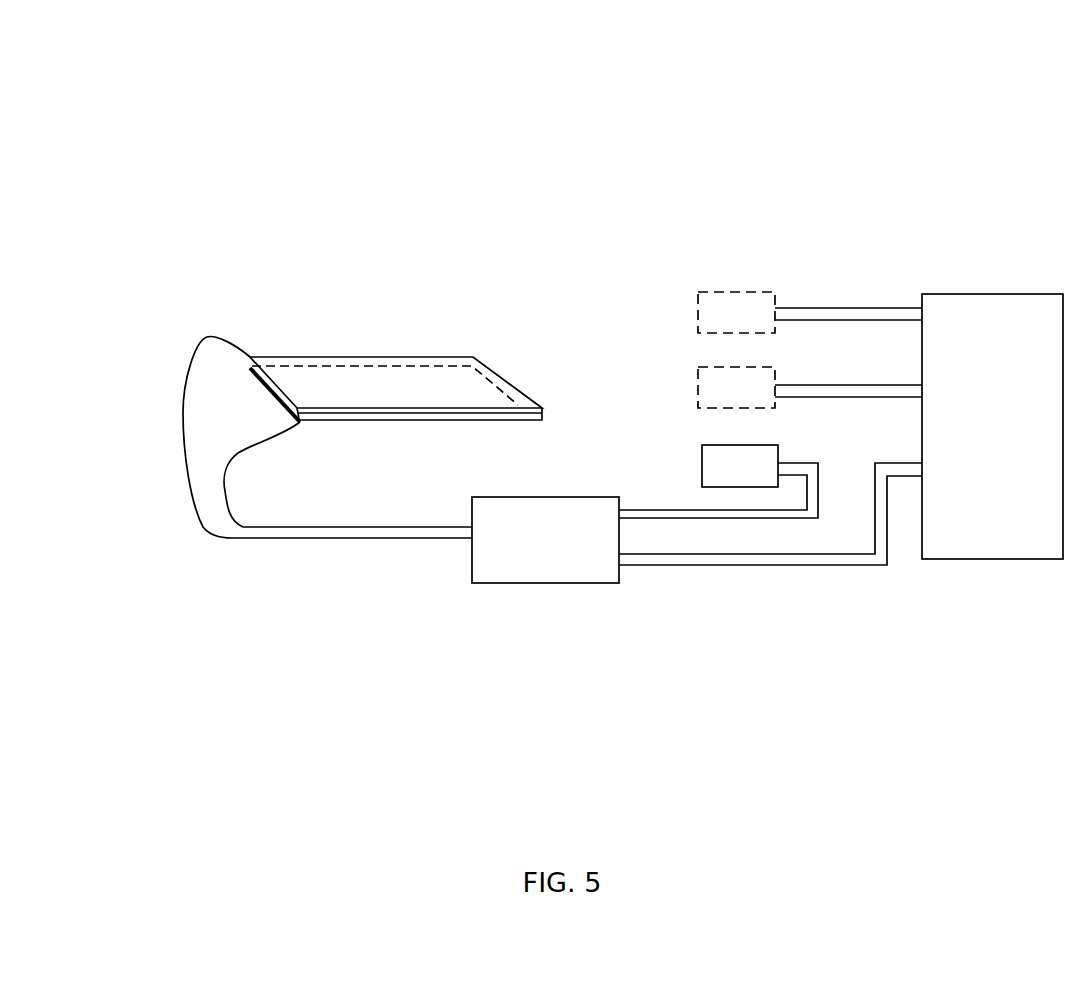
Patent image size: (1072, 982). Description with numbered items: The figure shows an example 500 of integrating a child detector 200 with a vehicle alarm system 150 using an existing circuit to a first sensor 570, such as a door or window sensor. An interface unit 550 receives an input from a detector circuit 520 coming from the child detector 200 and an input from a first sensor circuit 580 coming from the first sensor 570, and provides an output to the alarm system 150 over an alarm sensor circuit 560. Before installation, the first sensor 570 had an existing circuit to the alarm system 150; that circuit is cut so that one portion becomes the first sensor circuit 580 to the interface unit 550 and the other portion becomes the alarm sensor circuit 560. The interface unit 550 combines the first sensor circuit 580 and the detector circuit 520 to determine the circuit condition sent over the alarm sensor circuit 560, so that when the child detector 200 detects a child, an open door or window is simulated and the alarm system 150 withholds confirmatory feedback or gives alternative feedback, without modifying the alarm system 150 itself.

The example of integrating a child detector with an alarm system 500 is at (84, 57).
The child detector 200 is at (383, 356).
The detector circuit 520 is at (415, 524).
The interface unit 550 is at (577, 497).
The alarm sensor circuit 560 is at (757, 567).
The first sensor 570 is at (702, 455).
The first sensor circuit 580 is at (818, 473).
The alarm system 150 is at (1008, 294).